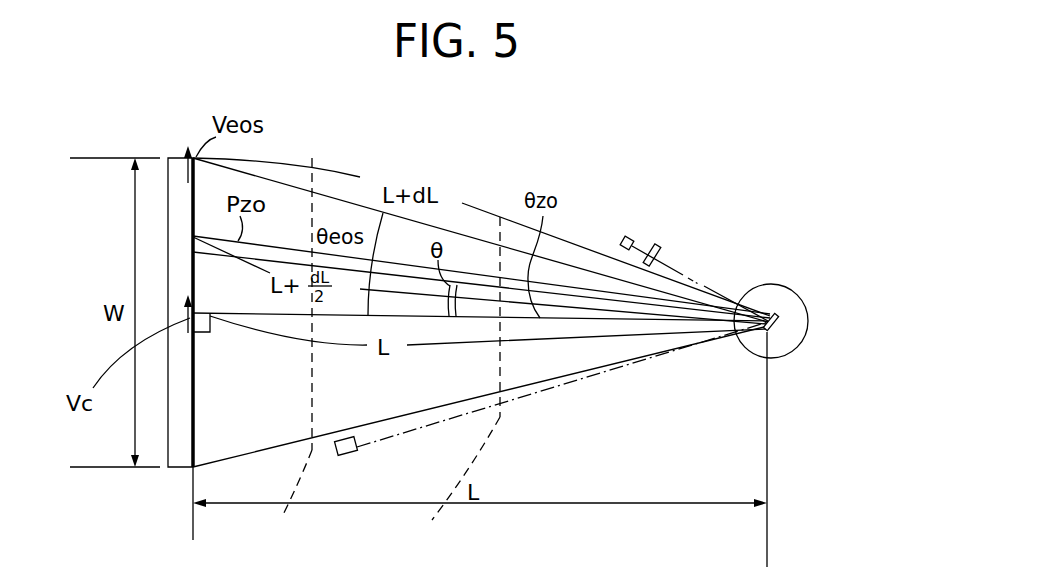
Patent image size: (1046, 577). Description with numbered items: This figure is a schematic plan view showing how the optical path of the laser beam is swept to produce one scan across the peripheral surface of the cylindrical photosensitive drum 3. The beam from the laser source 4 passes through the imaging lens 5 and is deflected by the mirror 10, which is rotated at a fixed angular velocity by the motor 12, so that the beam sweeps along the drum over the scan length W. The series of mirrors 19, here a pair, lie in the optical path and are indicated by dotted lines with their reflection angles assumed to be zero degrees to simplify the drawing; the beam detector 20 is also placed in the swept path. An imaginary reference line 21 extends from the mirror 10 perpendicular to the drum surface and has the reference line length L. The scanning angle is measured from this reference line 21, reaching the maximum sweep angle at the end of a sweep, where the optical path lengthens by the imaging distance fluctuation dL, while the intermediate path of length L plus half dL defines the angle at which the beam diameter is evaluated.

The photosensitive drum 3 is at (178, 470).
The laser source 4 is at (626, 236).
The imaging lens 5 is at (652, 244).
The mirror 10 is at (776, 312).
The motor 12 is at (780, 318).
The series of mirrors 19 is at (381, 353).
The beam detector 20 is at (346, 456).
The reference line 21 is at (247, 313).